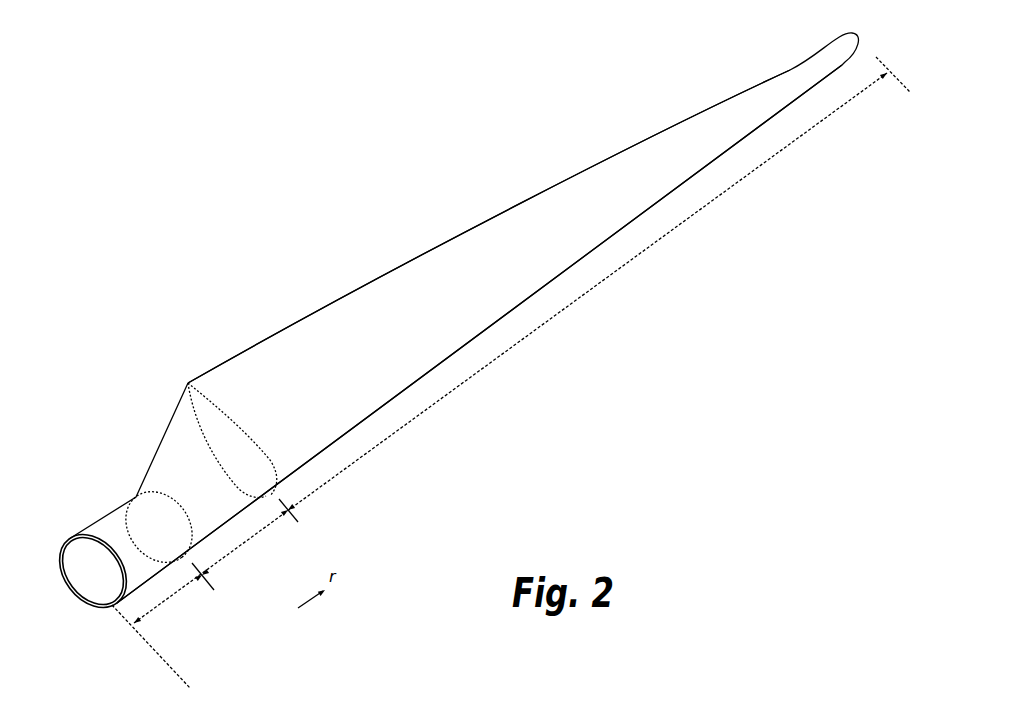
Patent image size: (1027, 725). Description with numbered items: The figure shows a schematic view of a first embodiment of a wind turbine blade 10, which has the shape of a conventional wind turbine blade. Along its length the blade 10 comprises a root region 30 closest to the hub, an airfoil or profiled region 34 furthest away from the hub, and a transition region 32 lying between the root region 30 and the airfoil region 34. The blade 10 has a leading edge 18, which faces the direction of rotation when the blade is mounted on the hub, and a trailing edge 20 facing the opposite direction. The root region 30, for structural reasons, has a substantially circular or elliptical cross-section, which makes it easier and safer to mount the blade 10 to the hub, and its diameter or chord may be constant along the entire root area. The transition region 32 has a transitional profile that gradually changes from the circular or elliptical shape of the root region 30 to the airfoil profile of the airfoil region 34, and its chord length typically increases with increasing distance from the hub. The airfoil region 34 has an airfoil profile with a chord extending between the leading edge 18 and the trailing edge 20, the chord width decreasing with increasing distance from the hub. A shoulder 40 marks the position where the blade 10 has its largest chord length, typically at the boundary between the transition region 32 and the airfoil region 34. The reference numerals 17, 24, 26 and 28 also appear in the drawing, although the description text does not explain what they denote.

The wind turbine blade 10 is at (320, 213).
The inner surface of root 17 is at (85, 558).
The leading edge 18 is at (617, 235).
The trailing edge 20 is at (510, 207).
The root region / cylindrical section 24 is at (84, 532).
The root end face 26 is at (100, 604).
The root end wall / ring 28 is at (74, 536).
The root region 30 is at (170, 598).
The transition region 32 is at (248, 542).
The airfoil region 34 is at (530, 337).
The shoulder 40 is at (188, 383).